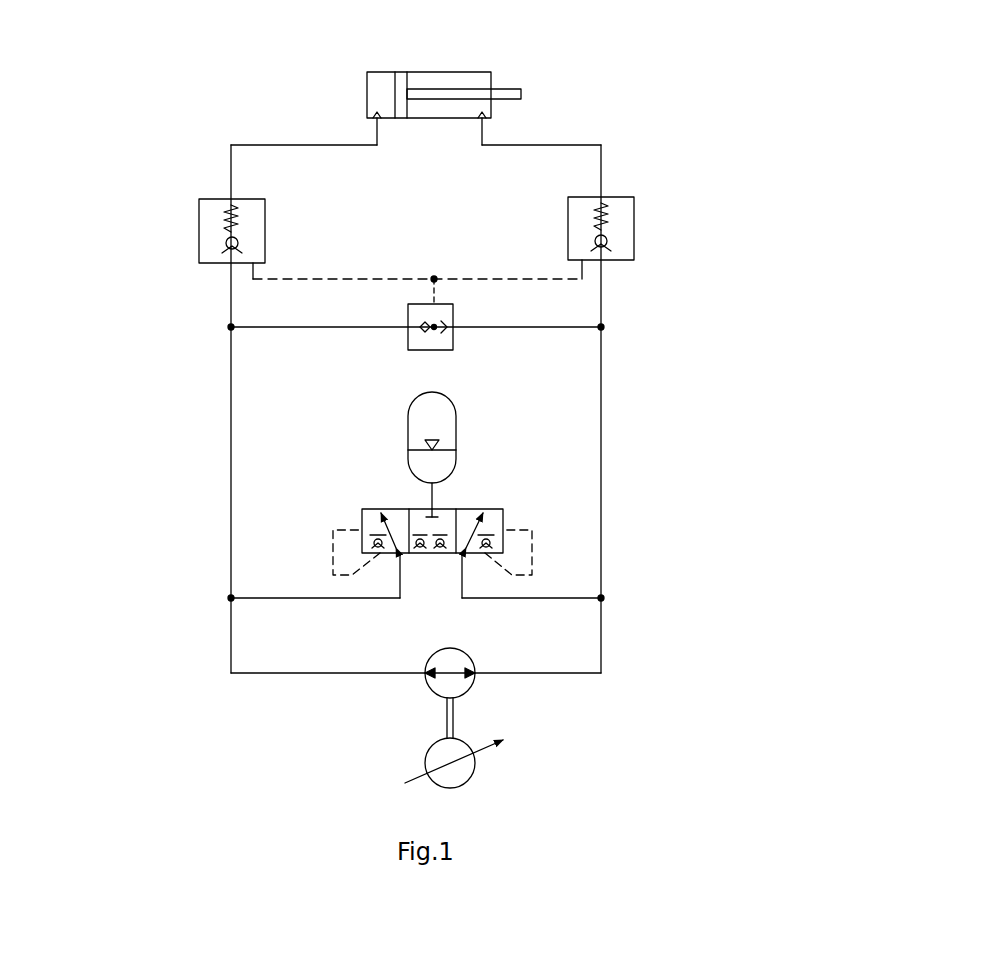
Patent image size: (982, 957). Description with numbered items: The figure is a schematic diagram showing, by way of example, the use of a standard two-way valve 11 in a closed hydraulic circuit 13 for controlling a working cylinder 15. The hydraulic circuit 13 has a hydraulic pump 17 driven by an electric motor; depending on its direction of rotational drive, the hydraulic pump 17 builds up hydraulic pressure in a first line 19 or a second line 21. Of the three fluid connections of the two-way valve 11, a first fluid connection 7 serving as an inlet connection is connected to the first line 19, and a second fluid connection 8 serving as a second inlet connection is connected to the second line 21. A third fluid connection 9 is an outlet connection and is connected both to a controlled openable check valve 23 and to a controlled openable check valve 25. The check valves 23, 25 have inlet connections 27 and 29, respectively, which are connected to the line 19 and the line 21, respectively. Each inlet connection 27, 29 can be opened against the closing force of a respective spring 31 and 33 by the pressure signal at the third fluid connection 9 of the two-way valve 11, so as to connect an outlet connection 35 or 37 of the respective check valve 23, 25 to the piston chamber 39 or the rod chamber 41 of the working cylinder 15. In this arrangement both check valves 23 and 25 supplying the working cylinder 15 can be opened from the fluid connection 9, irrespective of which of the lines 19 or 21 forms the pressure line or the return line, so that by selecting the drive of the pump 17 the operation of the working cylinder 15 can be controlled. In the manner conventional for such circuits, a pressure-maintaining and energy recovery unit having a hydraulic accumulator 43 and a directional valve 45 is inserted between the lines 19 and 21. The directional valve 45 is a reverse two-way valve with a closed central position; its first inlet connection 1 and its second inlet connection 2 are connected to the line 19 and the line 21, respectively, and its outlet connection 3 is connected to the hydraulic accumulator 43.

The first inlet connection 1 is at (400, 553).
The second inlet connection 2 is at (462, 553).
The outlet connection 3 is at (434, 508).
The first fluid connection 7 is at (408, 327).
The second fluid connection 8 is at (453, 327).
The third fluid connection 9 is at (434, 279).
The two-way valve 11 is at (435, 348).
The hydraulic circuit 13 is at (210, 465).
The working cylinder 15 is at (434, 62).
The hydraulic pump 17 is at (430, 686).
The first line 19 is at (231, 537).
The second line 21 is at (601, 476).
The check valve 23 is at (187, 232).
The check valve 25 is at (668, 200).
The inlet connection 27 is at (229, 264).
The inlet connection 29 is at (606, 260).
The spring 31 is at (222, 220).
The spring 33 is at (610, 218).
The outlet connection 35 is at (231, 200).
The outlet connection 37 is at (603, 197).
The piston chamber 39 is at (376, 94).
The rod chamber 41 is at (470, 78).
The hydraulic accumulator 43 is at (456, 435).
The directional valve 45 is at (370, 517).